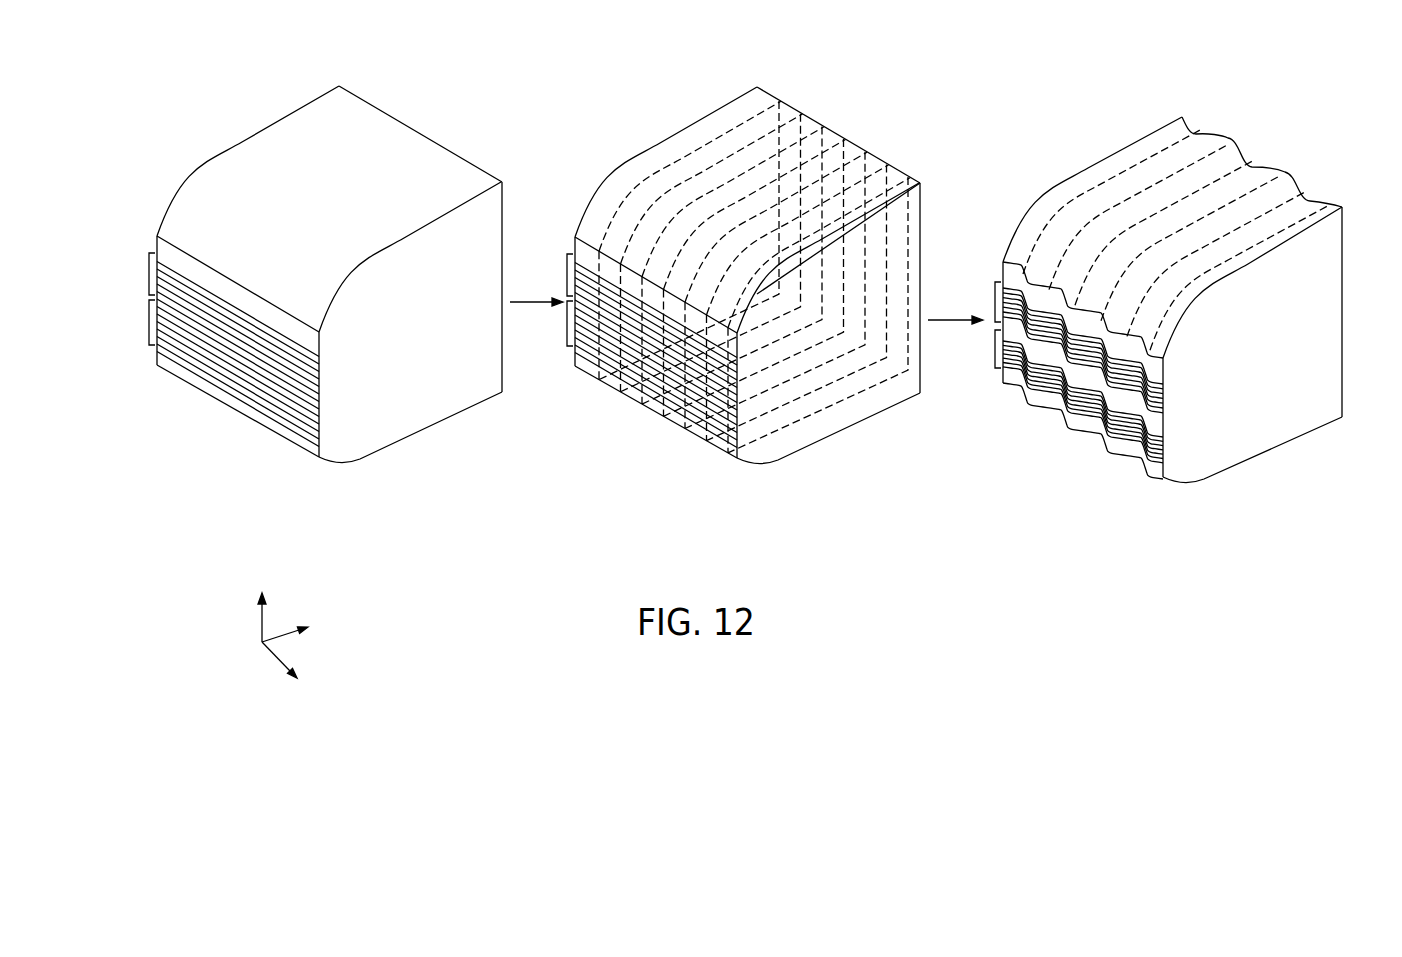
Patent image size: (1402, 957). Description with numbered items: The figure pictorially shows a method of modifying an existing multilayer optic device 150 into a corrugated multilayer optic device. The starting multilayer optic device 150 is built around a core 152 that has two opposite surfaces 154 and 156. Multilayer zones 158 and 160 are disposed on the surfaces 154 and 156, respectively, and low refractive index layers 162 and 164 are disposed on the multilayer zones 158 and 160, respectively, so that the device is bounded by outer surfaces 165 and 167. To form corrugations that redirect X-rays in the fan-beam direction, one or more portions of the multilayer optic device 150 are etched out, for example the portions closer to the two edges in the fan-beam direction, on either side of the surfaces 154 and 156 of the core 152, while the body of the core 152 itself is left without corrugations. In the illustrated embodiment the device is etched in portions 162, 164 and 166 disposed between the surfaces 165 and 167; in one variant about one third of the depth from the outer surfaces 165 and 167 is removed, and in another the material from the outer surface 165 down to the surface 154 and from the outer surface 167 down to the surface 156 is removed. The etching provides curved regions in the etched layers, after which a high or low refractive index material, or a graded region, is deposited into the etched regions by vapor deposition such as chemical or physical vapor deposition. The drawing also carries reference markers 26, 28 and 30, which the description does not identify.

The multilayer optic device 150 is at (387, 125).
The core 152 is at (672, 381).
The surface 154 is at (317, 382).
The surface 156 is at (320, 402).
The multilayer zone 158 is at (149, 273).
The multilayer zone 160 is at (149, 321).
The low refractive index layer 162 is at (186, 262).
The low refractive index layer 164 is at (207, 382).
The outer surface 165 is at (458, 173).
The etched portion 166 is at (875, 176).
The outer surface 167 is at (463, 417).
The first direction axis 26 is at (270, 663).
The second direction axis 28 is at (285, 632).
The third direction axis 30 is at (258, 618).